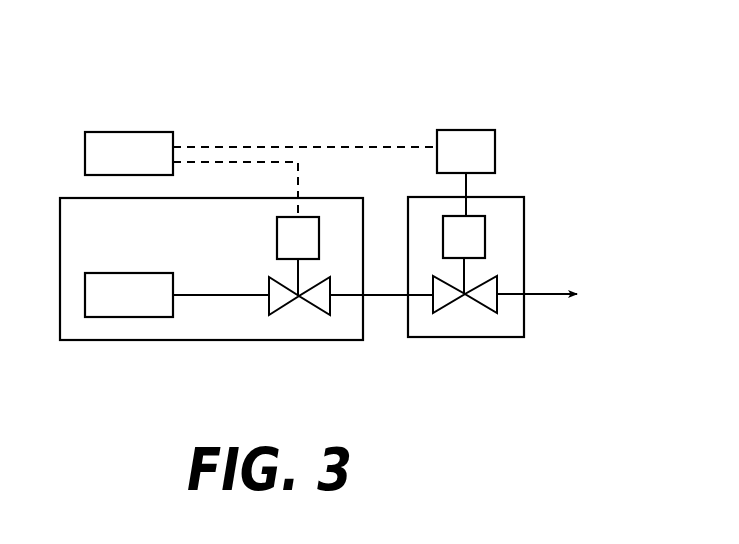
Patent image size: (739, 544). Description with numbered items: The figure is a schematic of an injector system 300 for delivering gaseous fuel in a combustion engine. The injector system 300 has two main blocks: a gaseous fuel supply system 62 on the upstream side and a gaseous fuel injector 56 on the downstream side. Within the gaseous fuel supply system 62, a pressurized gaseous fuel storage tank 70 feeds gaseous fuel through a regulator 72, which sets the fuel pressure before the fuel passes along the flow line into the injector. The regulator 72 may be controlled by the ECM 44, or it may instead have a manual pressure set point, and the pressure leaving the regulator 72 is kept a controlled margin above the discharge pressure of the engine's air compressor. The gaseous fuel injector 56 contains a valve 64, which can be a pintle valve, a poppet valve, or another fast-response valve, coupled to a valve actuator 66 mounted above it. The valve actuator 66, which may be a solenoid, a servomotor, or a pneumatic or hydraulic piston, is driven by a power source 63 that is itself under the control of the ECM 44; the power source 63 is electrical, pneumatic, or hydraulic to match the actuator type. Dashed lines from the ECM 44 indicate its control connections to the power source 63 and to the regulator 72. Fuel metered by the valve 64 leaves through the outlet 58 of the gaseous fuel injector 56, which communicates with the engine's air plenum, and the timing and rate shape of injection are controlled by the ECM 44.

The injector system 300 is at (473, 117).
The ECM 44 is at (146, 167).
The power source 63 is at (483, 165).
The gaseous fuel supply system 62 is at (129, 343).
The pressurized gaseous fuel storage tank 70 is at (146, 308).
The regulator 72 is at (268, 290).
The gaseous fuel injector 56 is at (477, 340).
The valve actuator 66 is at (486, 238).
The valve 64 is at (436, 306).
The outlet 58 is at (552, 302).